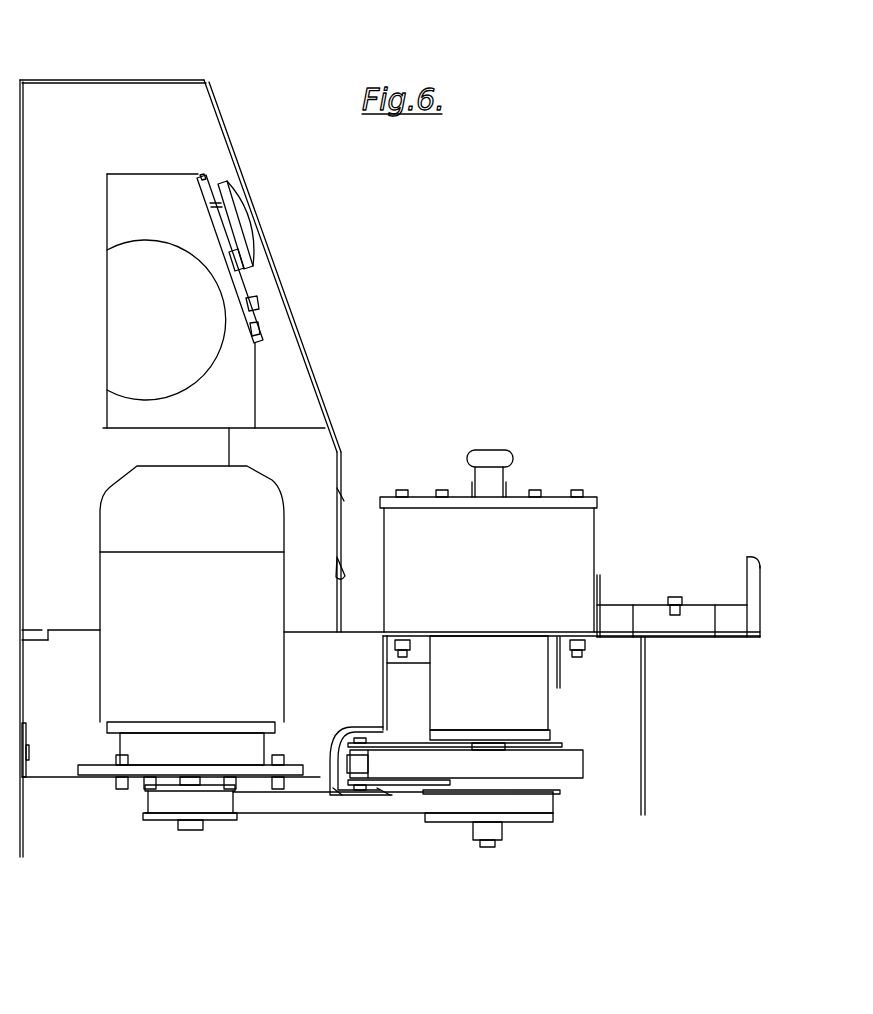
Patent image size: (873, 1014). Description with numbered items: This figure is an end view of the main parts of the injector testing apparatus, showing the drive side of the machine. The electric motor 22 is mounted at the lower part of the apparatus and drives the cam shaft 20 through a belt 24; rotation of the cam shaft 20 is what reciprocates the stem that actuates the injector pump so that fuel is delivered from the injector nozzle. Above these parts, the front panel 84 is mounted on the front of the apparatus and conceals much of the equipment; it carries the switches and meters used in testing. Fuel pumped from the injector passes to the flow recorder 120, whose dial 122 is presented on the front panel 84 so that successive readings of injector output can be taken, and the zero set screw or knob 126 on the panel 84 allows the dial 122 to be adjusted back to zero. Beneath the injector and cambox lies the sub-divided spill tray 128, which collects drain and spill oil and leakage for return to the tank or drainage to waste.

The panel 84 is at (240, 180).
The flow recorder 120 is at (222, 224).
The dial 122 is at (257, 233).
The zero set screw or knob 126 is at (259, 307).
The electric motor 22 is at (118, 595).
The cam shaft 20 is at (492, 745).
The belt 24 is at (300, 803).
The sub-divided spill tray 128 is at (737, 637).